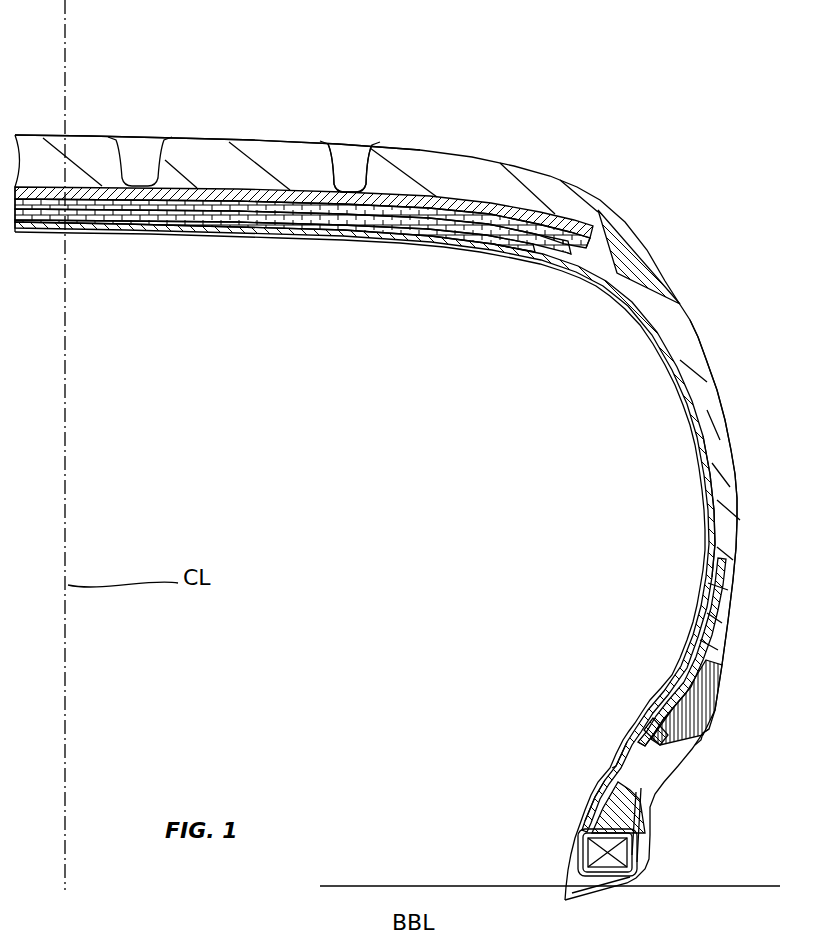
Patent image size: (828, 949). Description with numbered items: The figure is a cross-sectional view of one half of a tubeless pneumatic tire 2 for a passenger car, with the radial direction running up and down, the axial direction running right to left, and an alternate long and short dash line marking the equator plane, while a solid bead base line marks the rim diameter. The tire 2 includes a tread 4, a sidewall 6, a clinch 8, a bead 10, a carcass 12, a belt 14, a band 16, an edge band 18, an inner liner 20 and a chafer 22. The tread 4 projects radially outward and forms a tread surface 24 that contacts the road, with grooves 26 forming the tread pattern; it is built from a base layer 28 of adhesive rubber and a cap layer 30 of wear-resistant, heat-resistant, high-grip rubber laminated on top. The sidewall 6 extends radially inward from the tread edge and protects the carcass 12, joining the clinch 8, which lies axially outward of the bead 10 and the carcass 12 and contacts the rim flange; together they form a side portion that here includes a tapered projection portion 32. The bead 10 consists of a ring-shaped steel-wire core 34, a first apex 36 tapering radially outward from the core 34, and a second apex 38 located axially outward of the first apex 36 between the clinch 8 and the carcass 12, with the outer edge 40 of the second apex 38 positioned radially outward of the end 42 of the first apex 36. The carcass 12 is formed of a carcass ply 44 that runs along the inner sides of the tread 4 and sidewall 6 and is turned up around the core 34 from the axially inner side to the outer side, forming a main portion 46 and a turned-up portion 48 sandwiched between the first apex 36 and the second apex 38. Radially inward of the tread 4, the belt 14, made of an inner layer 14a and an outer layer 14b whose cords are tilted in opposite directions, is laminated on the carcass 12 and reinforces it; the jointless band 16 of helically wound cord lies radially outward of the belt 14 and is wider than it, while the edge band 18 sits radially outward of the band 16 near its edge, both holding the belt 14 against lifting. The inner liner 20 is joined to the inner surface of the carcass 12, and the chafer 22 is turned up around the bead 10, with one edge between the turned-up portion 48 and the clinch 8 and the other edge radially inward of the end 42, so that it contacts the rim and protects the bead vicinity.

The pneumatic tire 2 is at (516, 23).
The tread 4 is at (470, 140).
The sidewall 6 is at (727, 422).
The clinch 8 is at (705, 713).
The bead 10 is at (536, 808).
The carcass 12 is at (365, 549).
The belt 14 is at (293, 302).
The inner layer 14a is at (304, 233).
The outer layer 14b is at (331, 228).
The band 16 is at (236, 232).
The edge band 18 is at (495, 200).
The inner liner 20 is at (455, 253).
The chafer 22 is at (605, 888).
The tread surface 24 is at (265, 140).
The groove 26 is at (363, 148).
The base layer 28 is at (187, 193).
The cap layer 30 is at (93, 148).
The projection portion 32 is at (703, 737).
The core 34 is at (577, 843).
The first apex 36 is at (598, 827).
The second apex 38 is at (612, 768).
The outer edge 40 is at (722, 508).
The end 42 is at (627, 795).
The carcass ply 44 is at (558, 382).
The main portion 46 is at (701, 598).
The turned-up portion 48 is at (663, 713).